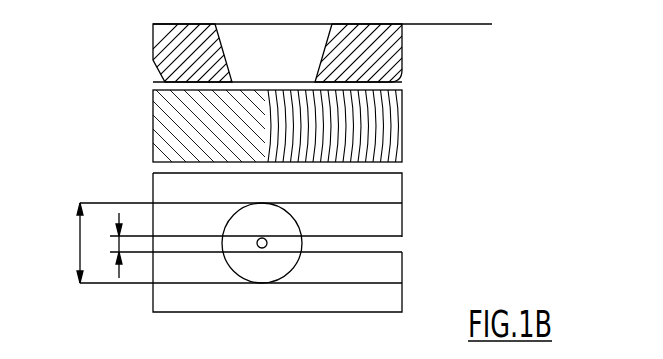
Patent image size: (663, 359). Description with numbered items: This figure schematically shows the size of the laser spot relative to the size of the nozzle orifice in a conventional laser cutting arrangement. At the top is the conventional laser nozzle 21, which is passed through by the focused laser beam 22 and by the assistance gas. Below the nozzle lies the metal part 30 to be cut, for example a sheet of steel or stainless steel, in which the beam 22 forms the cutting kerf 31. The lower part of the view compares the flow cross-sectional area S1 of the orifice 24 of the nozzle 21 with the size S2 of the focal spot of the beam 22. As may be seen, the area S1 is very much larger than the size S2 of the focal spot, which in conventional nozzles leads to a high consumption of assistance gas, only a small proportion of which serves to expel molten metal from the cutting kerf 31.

The laser nozzle 21 is at (305, 52).
The laser beam 22 is at (268, 243).
The orifice 24 is at (300, 214).
The metal part 30 is at (187, 112).
The cutting kerf 31 is at (402, 130).
The flow cross-sectional area S1 is at (65, 243).
The size of the focal spot S2 is at (103, 247).